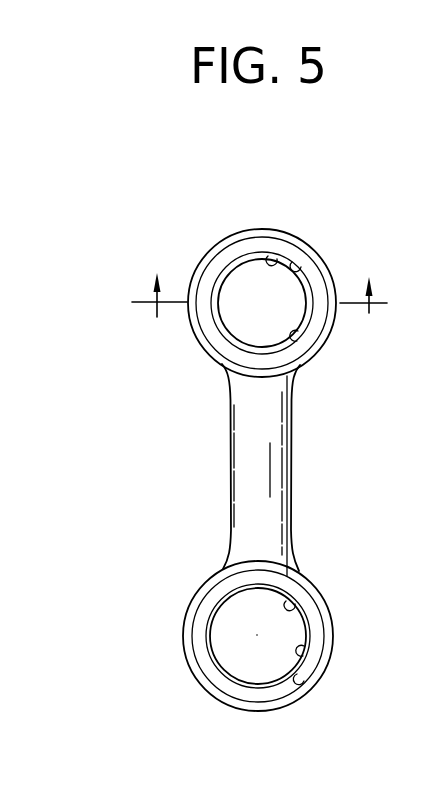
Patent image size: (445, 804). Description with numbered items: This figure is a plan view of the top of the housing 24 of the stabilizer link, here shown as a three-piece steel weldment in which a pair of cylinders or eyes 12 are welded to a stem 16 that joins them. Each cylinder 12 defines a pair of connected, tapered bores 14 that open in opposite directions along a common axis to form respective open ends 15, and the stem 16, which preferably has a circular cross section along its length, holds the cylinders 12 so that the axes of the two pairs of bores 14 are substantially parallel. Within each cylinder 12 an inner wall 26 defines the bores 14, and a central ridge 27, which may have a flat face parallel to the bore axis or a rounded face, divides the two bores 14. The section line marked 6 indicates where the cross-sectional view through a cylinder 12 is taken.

The section line 6- 6 is at (263, 285).
The cylinder 12 is at (209, 249).
The tapered bore 14 is at (276, 259).
The open end 15 is at (336, 330).
The stem 16 is at (232, 439).
The housing 24 is at (293, 458).
The inner wall 26 is at (300, 268).
The central ridge 27 is at (300, 338).